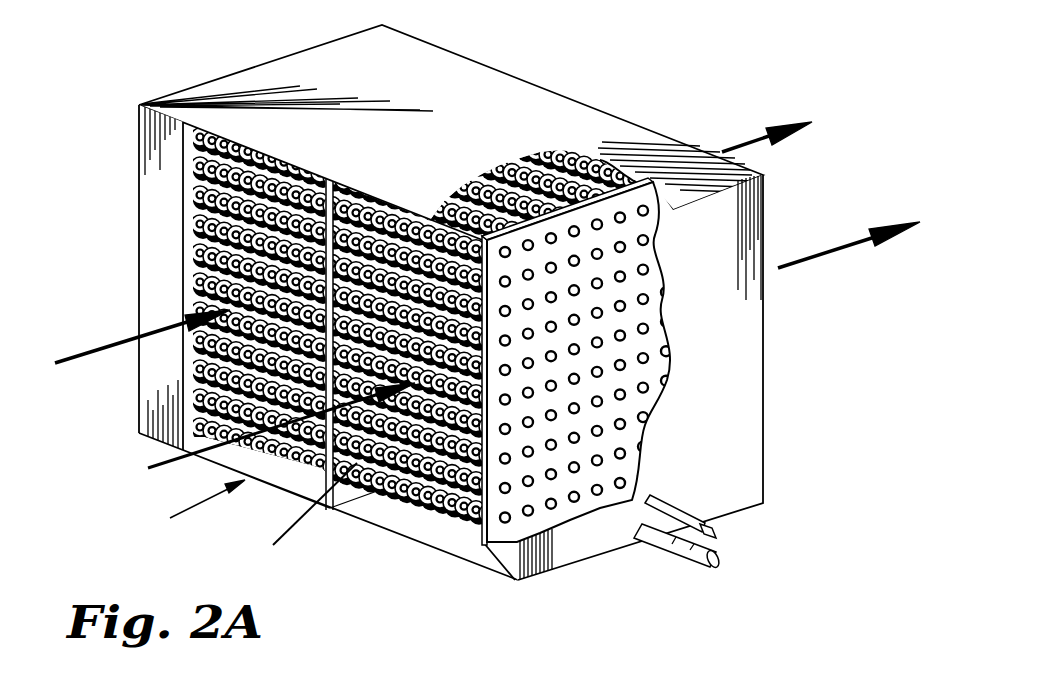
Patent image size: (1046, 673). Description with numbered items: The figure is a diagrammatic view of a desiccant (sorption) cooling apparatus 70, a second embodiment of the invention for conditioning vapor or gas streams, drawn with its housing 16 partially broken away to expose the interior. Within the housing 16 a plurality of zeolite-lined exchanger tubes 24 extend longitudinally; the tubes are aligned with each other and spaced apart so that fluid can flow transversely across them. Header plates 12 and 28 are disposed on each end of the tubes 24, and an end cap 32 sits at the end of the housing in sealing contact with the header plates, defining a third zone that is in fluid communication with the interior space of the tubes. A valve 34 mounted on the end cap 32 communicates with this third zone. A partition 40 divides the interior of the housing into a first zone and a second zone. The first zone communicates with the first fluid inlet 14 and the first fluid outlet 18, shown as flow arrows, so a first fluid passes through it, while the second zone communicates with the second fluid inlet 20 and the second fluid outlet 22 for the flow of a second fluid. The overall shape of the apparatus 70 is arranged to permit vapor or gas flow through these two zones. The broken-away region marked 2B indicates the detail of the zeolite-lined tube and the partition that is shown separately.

The header plate 12 is at (193, 212).
The first fluid inlet 14 is at (82, 355).
The housing 16 is at (518, 78).
The first fluid outlet 18 is at (730, 150).
The second fluid inlet 20 is at (148, 468).
The second fluid outlet 22 is at (822, 254).
The zeolite-lined exchanger tubes 24 is at (193, 288).
The header plate 28 is at (515, 523).
The end cap 32 is at (732, 368).
The valve 34 is at (720, 545).
The partition 40 is at (347, 490).
The desiccant cooling apparatus 70 is at (187, 509).
The detail view reference 2B is at (293, 519).